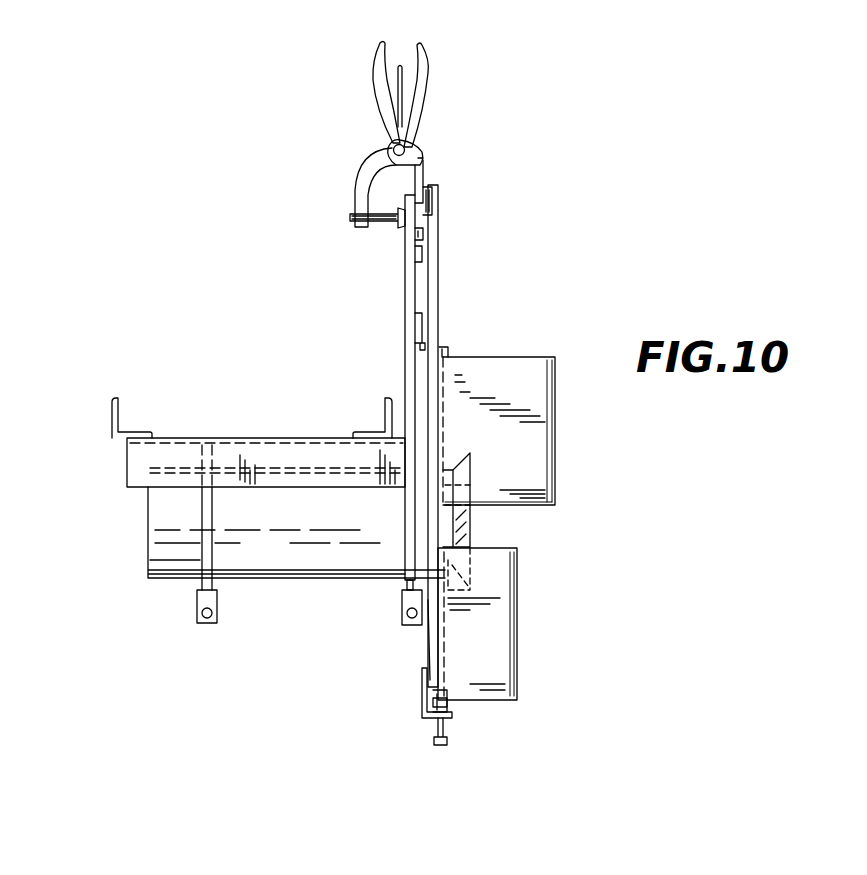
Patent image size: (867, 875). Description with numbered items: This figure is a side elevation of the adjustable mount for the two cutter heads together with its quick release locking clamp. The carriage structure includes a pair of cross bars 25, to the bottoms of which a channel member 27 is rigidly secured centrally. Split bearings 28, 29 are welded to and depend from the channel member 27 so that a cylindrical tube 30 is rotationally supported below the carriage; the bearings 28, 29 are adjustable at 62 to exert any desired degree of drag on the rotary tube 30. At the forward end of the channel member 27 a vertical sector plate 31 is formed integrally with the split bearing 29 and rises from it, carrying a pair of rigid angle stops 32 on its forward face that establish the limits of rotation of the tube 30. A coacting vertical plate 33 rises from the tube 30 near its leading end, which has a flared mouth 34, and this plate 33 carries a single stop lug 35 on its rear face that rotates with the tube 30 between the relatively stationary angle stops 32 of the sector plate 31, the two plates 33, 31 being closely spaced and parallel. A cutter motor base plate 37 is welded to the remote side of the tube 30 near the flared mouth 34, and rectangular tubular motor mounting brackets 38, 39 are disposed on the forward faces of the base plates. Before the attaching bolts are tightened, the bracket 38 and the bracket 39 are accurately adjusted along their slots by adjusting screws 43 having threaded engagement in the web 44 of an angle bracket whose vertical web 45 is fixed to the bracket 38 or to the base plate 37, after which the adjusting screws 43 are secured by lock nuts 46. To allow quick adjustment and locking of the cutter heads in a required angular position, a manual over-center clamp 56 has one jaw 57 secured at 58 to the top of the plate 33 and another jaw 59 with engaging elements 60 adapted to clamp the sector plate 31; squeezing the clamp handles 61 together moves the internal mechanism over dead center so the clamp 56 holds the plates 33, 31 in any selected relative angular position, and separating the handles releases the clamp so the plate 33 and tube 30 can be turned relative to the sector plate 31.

The cross bars 25 is at (112, 415).
The channel member 27 is at (298, 448).
The split bearing 28 is at (200, 565).
The split bearing 29 is at (405, 580).
The cylindrical tube 30 is at (318, 563).
The sector plate 31 is at (404, 298).
The angle stops 32 is at (421, 255).
The vertical plate 33 is at (439, 295).
The flared mouth 34 is at (462, 520).
The stop lug 35 is at (424, 233).
The cutter motor base plate 37 is at (428, 652).
The motor mounting bracket 38 is at (537, 397).
The motor mounting bracket 39 is at (500, 617).
The adjusting screws 43 is at (446, 740).
The web 44 is at (447, 705).
The vertical web 45 is at (446, 692).
The lock nuts 46 is at (430, 718).
The over-center clamp 56 is at (425, 75).
The jaw 57 is at (422, 172).
The securing point 58 is at (432, 200).
The jaw 59 is at (356, 190).
The engaging elements 60 is at (397, 224).
The clamp handles 61 is at (400, 62).
The bearing adjustment 62 is at (208, 625).